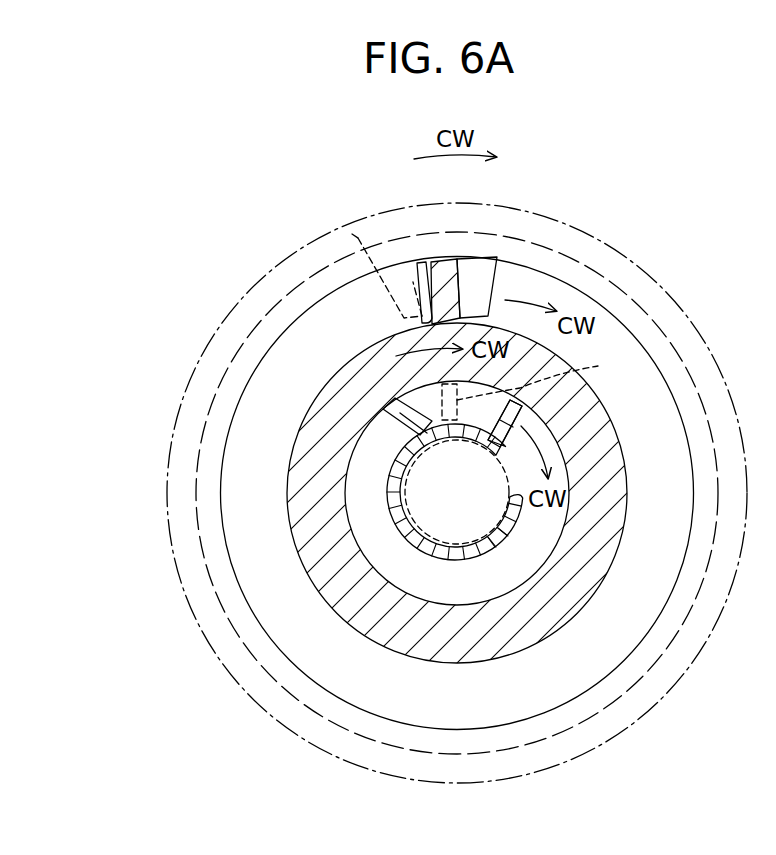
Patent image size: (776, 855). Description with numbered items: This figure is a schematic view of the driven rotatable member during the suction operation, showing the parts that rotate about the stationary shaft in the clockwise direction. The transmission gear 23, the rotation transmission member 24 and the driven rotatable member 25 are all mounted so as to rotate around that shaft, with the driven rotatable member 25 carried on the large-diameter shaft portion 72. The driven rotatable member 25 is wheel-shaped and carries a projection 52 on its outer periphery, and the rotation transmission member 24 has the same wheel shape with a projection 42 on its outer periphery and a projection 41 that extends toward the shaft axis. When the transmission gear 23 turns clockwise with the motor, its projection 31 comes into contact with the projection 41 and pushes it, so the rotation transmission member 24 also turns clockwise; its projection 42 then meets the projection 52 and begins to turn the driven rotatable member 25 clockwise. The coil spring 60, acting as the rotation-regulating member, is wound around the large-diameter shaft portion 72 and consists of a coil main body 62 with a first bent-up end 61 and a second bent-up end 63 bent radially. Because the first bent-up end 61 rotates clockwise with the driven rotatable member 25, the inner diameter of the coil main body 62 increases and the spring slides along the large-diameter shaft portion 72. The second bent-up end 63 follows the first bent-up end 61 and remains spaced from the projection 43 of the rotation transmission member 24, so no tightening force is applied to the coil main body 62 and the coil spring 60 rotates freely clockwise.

The transmission gear 23 is at (242, 297).
The rotation transmission member 24 is at (292, 444).
The driven rotatable member 25 is at (222, 491).
The projection 31 is at (360, 243).
The projection 41 is at (440, 272).
The projection 42 is at (408, 290).
The projection 43 is at (400, 414).
The projection 52 is at (470, 282).
The coil spring 60 is at (524, 534).
The first bent-up end 61 is at (537, 387).
The coil main body 62 is at (501, 537).
The second bent-up end 63 is at (520, 412).
The large-diameter shaft portion 72 is at (447, 545).